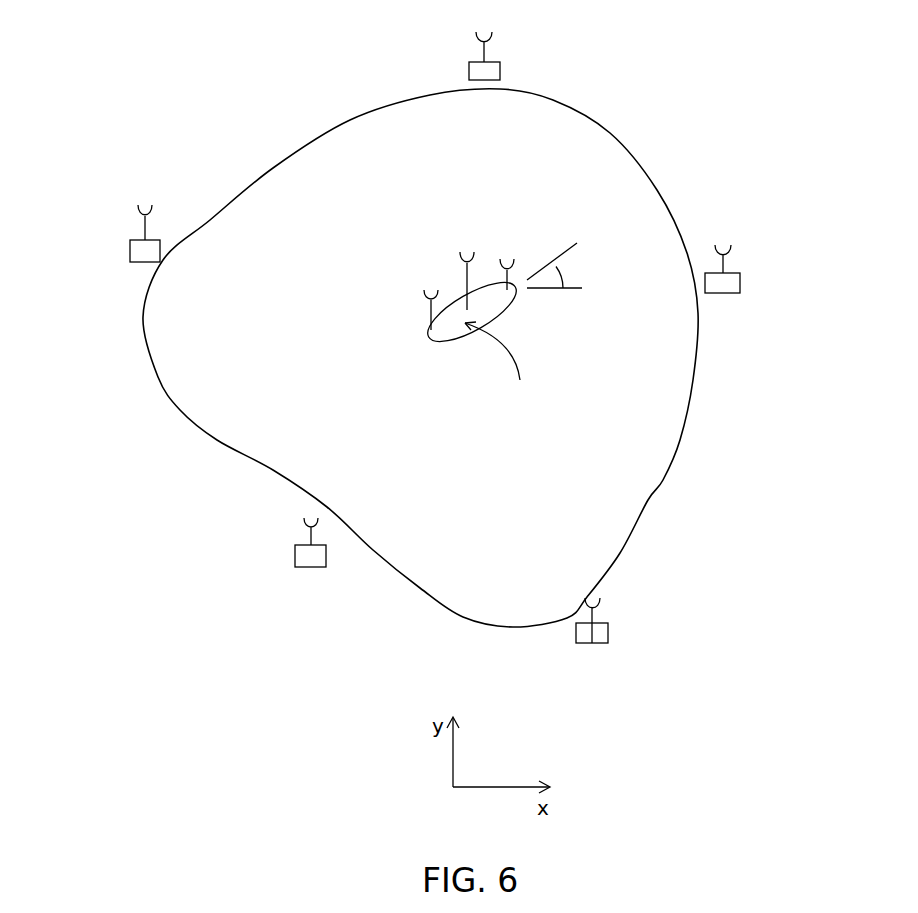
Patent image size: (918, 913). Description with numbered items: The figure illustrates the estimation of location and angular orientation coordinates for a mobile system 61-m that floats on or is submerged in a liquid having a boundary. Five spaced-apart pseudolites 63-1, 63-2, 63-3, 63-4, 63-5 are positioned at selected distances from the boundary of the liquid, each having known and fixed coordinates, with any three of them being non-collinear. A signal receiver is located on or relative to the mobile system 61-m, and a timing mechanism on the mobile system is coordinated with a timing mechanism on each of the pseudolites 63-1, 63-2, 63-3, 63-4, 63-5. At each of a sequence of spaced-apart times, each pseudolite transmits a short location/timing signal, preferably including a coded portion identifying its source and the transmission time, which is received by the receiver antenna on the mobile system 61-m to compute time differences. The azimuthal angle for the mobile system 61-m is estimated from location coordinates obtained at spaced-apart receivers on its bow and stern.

The pseudolite 63-1 is at (490, 70).
The pseudolite 63-2 is at (732, 282).
The pseudolite 63-3 is at (605, 630).
The pseudolite 63-4 is at (300, 557).
The pseudolite 63-5 is at (137, 250).
The mobile system 61-m is at (483, 307).